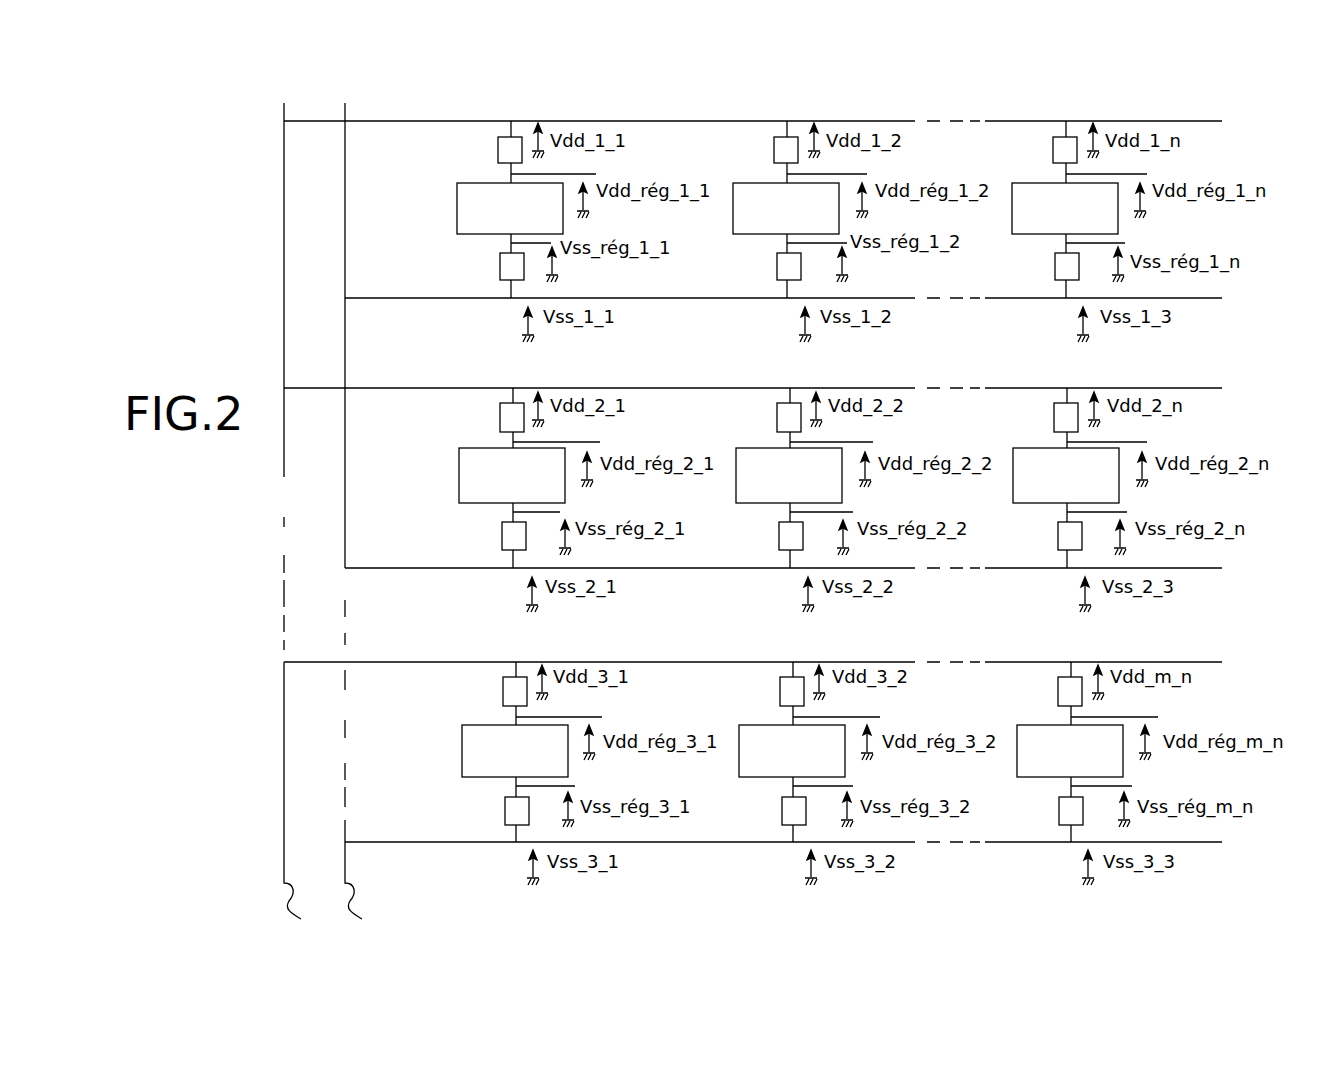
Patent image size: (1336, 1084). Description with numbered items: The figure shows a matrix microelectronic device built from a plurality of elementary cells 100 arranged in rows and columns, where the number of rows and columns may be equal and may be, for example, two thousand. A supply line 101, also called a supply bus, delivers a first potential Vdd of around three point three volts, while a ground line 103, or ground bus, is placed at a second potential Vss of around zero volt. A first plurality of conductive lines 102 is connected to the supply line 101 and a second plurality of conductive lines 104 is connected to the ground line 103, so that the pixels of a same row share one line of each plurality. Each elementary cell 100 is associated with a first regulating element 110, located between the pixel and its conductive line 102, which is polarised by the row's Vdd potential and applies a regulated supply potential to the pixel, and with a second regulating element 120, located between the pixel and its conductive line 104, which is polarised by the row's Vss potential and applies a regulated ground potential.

The elementary cell 100 is at (1190, 693).
The first regulating element 110 is at (1056, 690).
The second regulating element 120 is at (1040, 858).
The first plurality of conductive lines 102 is at (624, 112).
The second plurality of conductive lines 104 is at (688, 838).
The supply line 101 is at (288, 617).
The ground line 103 is at (341, 507).